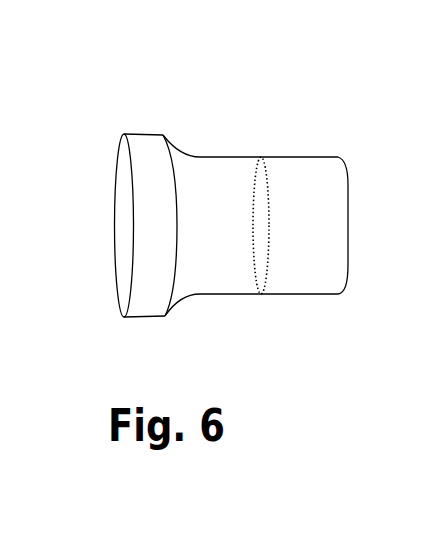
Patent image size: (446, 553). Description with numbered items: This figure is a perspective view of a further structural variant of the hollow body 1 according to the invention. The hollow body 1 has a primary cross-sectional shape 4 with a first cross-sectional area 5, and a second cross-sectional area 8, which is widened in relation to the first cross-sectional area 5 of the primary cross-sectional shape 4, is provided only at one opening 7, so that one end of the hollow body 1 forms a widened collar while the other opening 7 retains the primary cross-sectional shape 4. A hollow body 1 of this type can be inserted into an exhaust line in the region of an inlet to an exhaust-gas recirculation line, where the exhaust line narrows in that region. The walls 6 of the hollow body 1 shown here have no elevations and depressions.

The hollow body 1 is at (200, 133).
The primary cross-sectional shape 4 is at (305, 157).
The first cross-sectional area 5 is at (262, 175).
The walls 6 is at (222, 283).
The opening 7 is at (117, 260).
The second cross-sectional area 8 is at (123, 222).